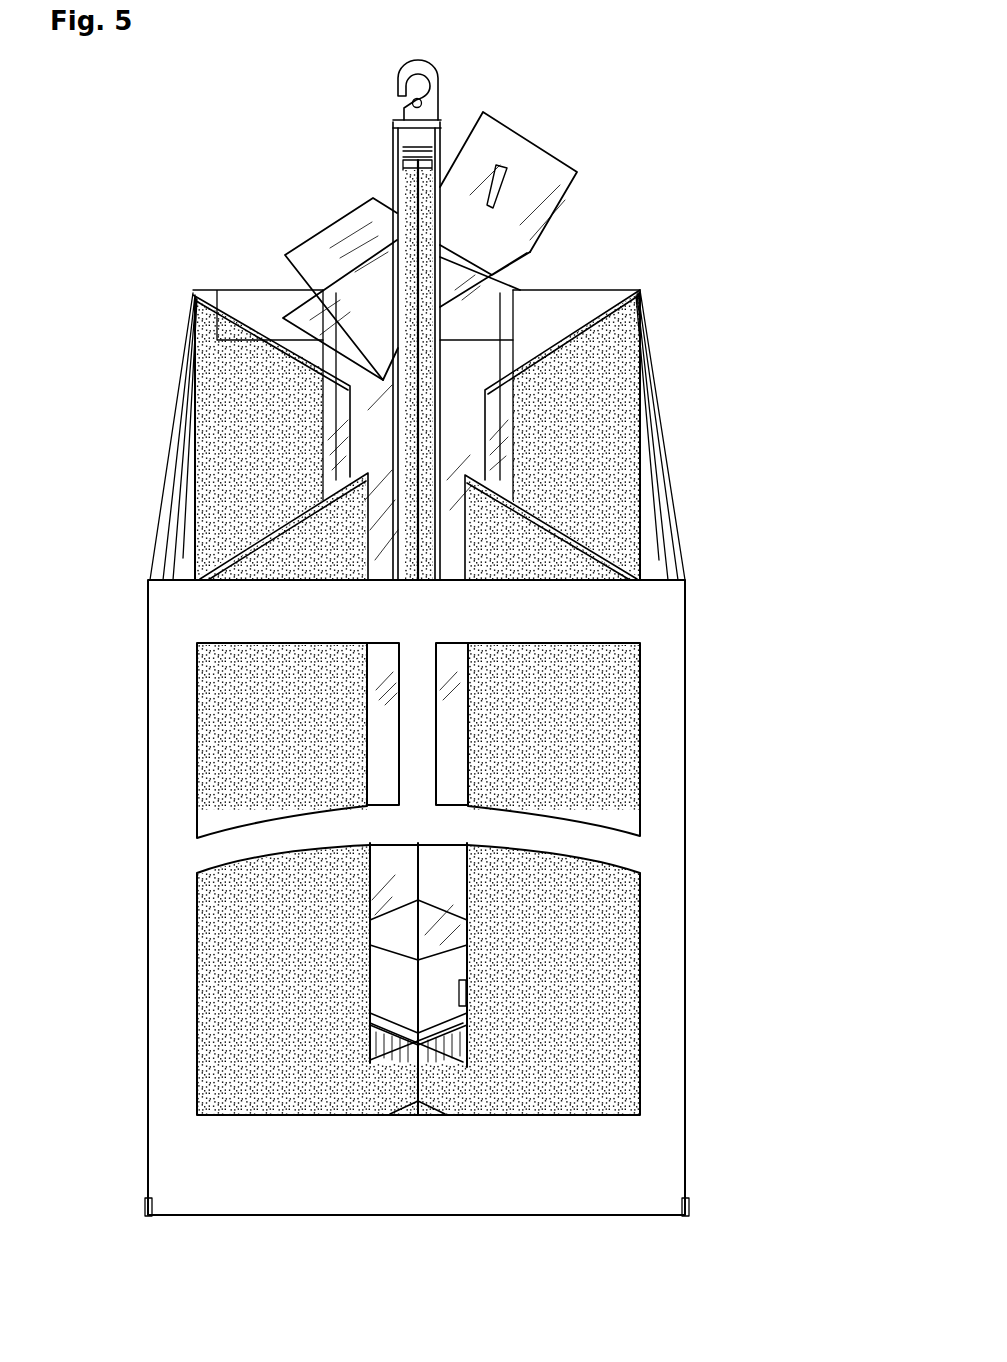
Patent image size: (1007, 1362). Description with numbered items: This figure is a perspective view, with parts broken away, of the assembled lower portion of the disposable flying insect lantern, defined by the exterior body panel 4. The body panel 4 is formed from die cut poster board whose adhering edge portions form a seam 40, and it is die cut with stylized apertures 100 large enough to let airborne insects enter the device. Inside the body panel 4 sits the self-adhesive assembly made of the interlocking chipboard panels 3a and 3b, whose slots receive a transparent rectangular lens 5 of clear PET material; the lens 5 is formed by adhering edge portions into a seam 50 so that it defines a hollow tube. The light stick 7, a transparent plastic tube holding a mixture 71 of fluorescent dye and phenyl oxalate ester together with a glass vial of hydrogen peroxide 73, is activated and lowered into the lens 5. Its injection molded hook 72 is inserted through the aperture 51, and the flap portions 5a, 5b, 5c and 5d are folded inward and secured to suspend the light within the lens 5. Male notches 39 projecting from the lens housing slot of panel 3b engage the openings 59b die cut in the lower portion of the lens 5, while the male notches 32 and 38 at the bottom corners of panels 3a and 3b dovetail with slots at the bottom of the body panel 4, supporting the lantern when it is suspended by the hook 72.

The body panel 4 is at (172, 905).
The seam 40 is at (205, 297).
The seam 50 is at (330, 418).
The transparent lens 5 is at (490, 427).
The flap portion 5a is at (522, 159).
The flap portion 5b is at (492, 290).
The flap portion 5c is at (313, 313).
The flap portion 5d is at (350, 242).
The aperture 51 is at (505, 163).
The light stick 7 is at (523, 290).
The mixture of fluorescent dye and phenyl oxalate ester 71 is at (415, 148).
The hook 72 is at (425, 62).
The hydrogen peroxide 73 is at (418, 215).
The interlocking panel 3a is at (250, 745).
The interlocking panel 3b is at (545, 718).
The stylized apertures 100 is at (195, 793).
The male notches 39 is at (460, 1037).
The opening 59b is at (463, 990).
The male notch 32 is at (148, 1215).
The male notch 38 is at (685, 1215).